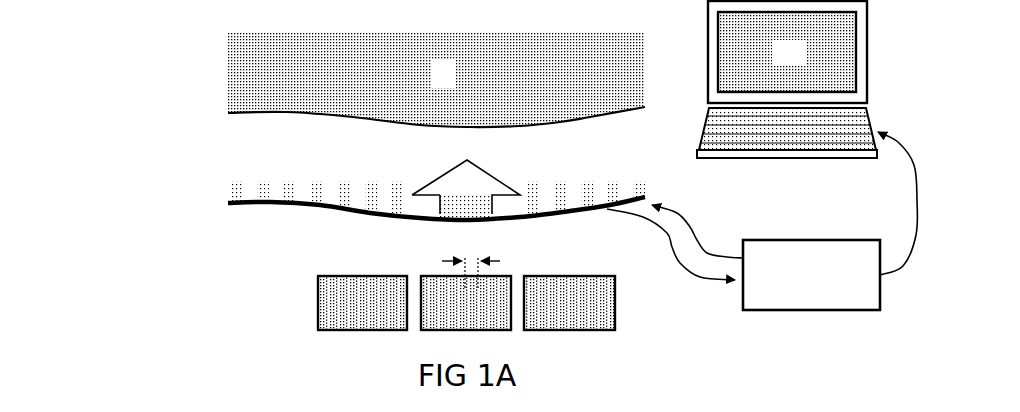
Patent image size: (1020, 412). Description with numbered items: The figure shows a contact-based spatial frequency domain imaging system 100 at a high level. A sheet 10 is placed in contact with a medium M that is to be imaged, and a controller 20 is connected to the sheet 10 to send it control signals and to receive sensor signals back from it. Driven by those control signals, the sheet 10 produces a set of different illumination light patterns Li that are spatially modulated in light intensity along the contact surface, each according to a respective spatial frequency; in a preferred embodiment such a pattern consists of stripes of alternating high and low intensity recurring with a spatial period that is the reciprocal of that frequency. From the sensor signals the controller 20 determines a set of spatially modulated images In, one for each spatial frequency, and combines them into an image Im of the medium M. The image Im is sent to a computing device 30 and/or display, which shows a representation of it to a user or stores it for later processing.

The SFDI system 100 is at (83, 58).
The sheet 10 is at (210, 198).
The controller 20 is at (811, 275).
The computing device 30 is at (787, 79).
The medium M is at (436, 80).
The illumination light patterns Li is at (466, 187).
The spatially modulated images In is at (306, 297).
The image Im is at (897, 192).